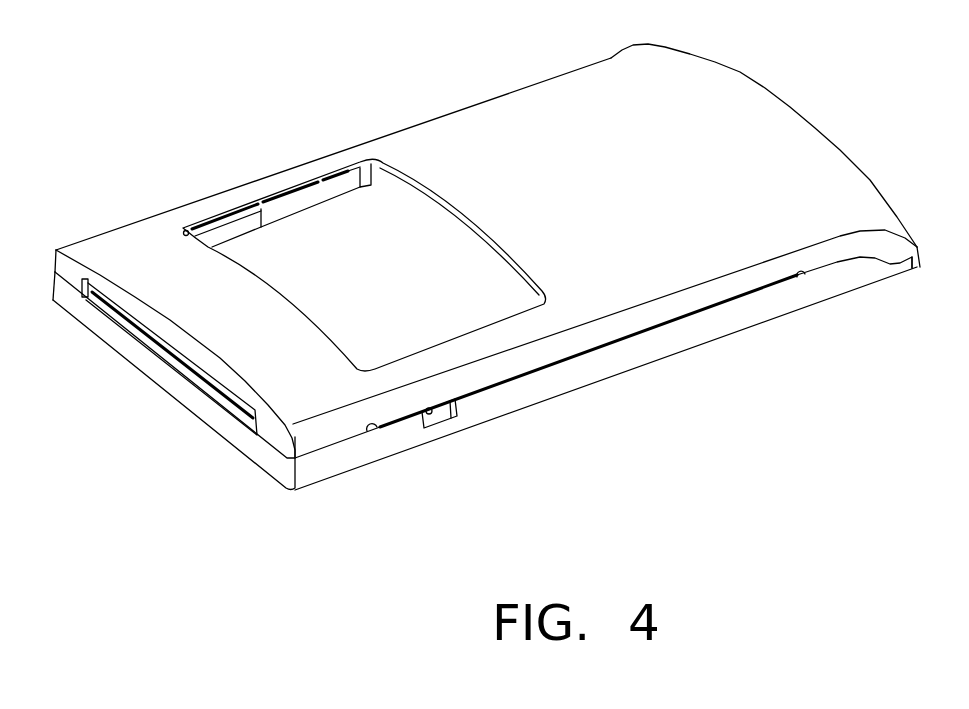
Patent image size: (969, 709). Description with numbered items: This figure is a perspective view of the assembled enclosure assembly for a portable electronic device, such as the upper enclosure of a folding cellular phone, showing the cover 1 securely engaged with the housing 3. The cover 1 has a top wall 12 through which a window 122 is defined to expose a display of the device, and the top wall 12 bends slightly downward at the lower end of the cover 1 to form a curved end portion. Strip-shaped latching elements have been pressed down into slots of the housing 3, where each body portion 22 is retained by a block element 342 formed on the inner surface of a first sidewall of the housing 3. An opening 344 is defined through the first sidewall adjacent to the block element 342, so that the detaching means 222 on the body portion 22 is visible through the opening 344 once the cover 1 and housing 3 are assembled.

The cover 1 is at (486, 262).
The top wall 12 is at (487, 235).
The window 122 is at (425, 222).
The body portion 22 is at (289, 204).
The block element 342 is at (337, 172).
The housing 3 is at (485, 384).
The opening 344 is at (455, 418).
The detaching means 222 is at (432, 414).